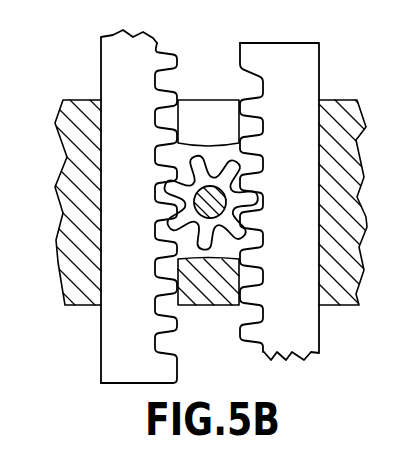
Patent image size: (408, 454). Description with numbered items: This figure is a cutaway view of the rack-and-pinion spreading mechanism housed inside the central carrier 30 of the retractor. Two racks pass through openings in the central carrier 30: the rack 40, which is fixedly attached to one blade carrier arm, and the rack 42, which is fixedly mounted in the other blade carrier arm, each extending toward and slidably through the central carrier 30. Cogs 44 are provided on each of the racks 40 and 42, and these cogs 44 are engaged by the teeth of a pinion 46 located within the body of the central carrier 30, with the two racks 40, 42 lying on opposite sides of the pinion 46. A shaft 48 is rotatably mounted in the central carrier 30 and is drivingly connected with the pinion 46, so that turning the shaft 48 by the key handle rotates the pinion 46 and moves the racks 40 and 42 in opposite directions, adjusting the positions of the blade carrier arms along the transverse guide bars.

The central carrier 30 is at (341, 305).
The rack 40 is at (306, 68).
The rack 42 is at (108, 70).
The cogs 44 is at (182, 319).
The pinion 46 is at (255, 162).
The shaft 48 is at (218, 208).